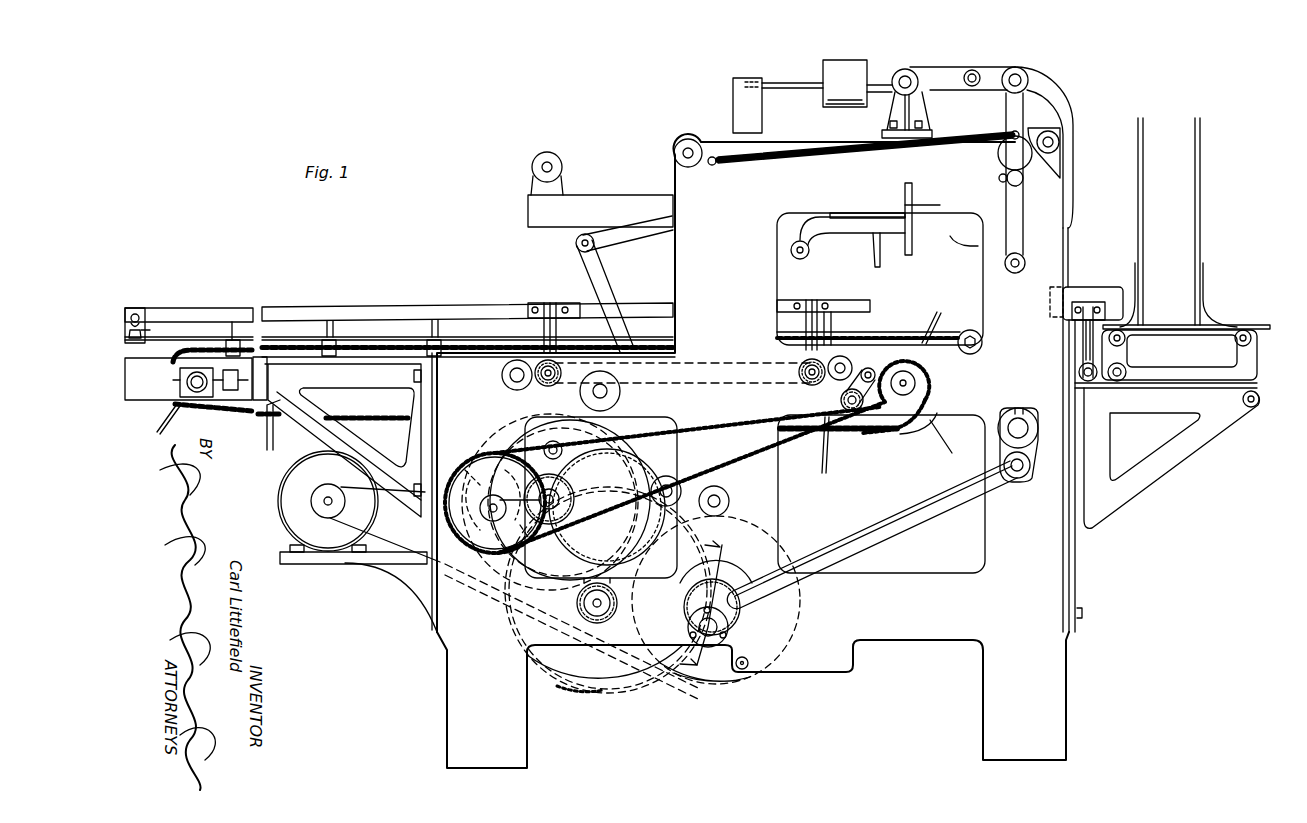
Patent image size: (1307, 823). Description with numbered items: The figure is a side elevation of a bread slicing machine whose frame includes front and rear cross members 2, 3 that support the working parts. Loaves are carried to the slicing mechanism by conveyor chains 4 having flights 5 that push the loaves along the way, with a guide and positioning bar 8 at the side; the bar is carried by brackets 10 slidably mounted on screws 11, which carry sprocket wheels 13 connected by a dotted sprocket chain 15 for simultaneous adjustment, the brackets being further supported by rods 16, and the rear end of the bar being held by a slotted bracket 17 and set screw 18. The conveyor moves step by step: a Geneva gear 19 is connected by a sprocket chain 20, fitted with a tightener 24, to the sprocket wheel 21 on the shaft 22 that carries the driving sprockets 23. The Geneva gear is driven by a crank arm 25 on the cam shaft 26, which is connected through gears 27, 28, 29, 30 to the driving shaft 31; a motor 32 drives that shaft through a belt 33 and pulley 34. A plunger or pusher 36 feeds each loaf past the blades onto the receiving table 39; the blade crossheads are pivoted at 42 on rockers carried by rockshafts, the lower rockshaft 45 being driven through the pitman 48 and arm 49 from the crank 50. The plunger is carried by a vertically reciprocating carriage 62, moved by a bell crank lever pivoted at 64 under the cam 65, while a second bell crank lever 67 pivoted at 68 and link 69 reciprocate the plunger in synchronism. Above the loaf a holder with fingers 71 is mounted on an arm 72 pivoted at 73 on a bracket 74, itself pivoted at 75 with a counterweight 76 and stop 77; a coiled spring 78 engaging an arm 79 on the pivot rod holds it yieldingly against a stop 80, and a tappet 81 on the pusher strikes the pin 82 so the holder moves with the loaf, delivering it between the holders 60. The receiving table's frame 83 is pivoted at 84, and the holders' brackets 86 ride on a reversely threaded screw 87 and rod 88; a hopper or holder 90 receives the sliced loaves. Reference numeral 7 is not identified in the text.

The front cross member 2 is at (432, 615).
The rear cross member 3 is at (1076, 575).
The conveyor chains 4 is at (245, 413).
The flights 5 is at (158, 426).
The section line 7 is at (699, 601).
The guide and positioning bar 8 is at (450, 305).
The brackets 10 is at (546, 303).
The screws 11 is at (547, 386).
The sprocket wheels 13 is at (828, 380).
The sprocket chain 15 is at (694, 386).
The rods 16 is at (510, 378).
The bracket 17 is at (138, 308).
The set screw 18 is at (156, 330).
The Geneva gear 19 is at (570, 625).
The sprocket chain 20 is at (762, 456).
The sprocket wheel 21 is at (918, 402).
The shaft 22 is at (912, 383).
The driving sprockets 23 is at (910, 436).
The tightener 24 is at (850, 389).
The driving crank arm 25 is at (548, 490).
The cam shaft 26 is at (548, 495).
The gear 27 is at (619, 548).
The gear 28 is at (618, 600).
The gear 29 is at (570, 690).
The gear 30 is at (735, 575).
The driving shaft 31 is at (703, 598).
The motor 32 is at (283, 506).
The belt 33 is at (385, 548).
The pulley 34 is at (714, 678).
The plunger or pusher 36 is at (881, 250).
The receiving table 39 is at (1165, 325).
The pivot 42 is at (1048, 131).
The lower rockshaft 45 is at (1022, 418).
The pitman 48 is at (945, 520).
The arm 49 is at (1031, 456).
The crank 50 is at (690, 612).
The holders 60 is at (1096, 287).
The carriage 62 is at (733, 93).
The pivot 64 is at (608, 392).
The cam 65 is at (563, 428).
The bell crank lever 67 is at (628, 536).
The pivot 68 is at (690, 496).
The link 69 is at (642, 235).
The fingers 71 is at (965, 228).
The arm 72 is at (1068, 130).
The pivot rod 73 is at (1015, 66).
The bracket 74 is at (938, 66).
The pivot 75 is at (904, 68).
The counterweight 76 is at (836, 60).
The stop 77 is at (972, 70).
The coiled spring 78 is at (765, 164).
The arm 79 is at (998, 160).
The stop 80 is at (1000, 183).
The tappet 81 is at (903, 200).
The pin 82 is at (1013, 273).
The bed or supporting frame 83 is at (1198, 370).
The pivot 84 is at (1251, 408).
The supporting brackets 86 is at (1083, 340).
The reversely threaded screw 87 is at (1100, 412).
The rod 88 is at (1119, 382).
The hopper or holder 90 is at (1195, 222).